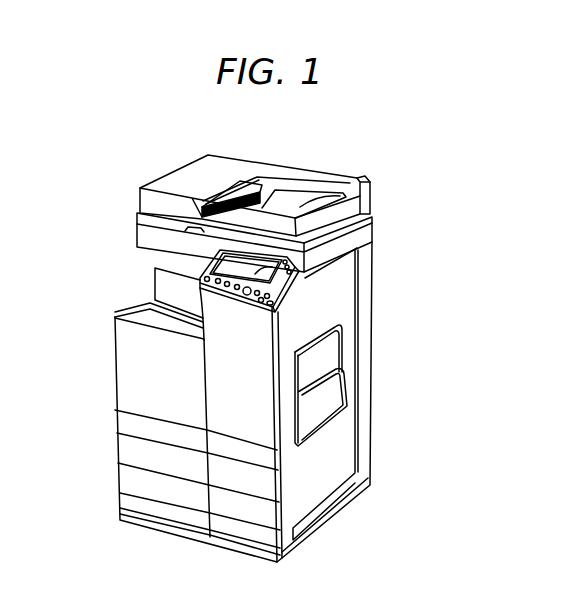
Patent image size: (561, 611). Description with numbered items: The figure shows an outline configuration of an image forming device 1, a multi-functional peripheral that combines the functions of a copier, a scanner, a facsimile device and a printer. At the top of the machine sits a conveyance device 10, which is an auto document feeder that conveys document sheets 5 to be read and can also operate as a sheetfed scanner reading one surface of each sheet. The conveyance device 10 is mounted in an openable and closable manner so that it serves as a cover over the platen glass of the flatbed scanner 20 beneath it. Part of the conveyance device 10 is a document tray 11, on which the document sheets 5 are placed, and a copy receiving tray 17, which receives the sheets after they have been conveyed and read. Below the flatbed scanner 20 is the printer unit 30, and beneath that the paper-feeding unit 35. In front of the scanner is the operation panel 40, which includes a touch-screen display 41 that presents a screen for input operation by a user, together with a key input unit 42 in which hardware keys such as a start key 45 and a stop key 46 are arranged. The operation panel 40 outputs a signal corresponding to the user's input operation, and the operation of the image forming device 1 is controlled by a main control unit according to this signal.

The image forming device 1 is at (237, 120).
The conveyance device 10 is at (191, 181).
The document sheet 5 is at (252, 193).
The document tray 11 is at (288, 190).
The copy receiving tray 17 is at (311, 200).
The flatbed scanner 20 is at (151, 240).
The operation panel 40 is at (153, 269).
The touch-screen display 41 is at (290, 285).
The key input unit 42 is at (227, 287).
The start key 45 is at (247, 296).
The stop key 46 is at (261, 303).
The printer unit 30 is at (129, 380).
The paper-feeding unit 35 is at (131, 452).